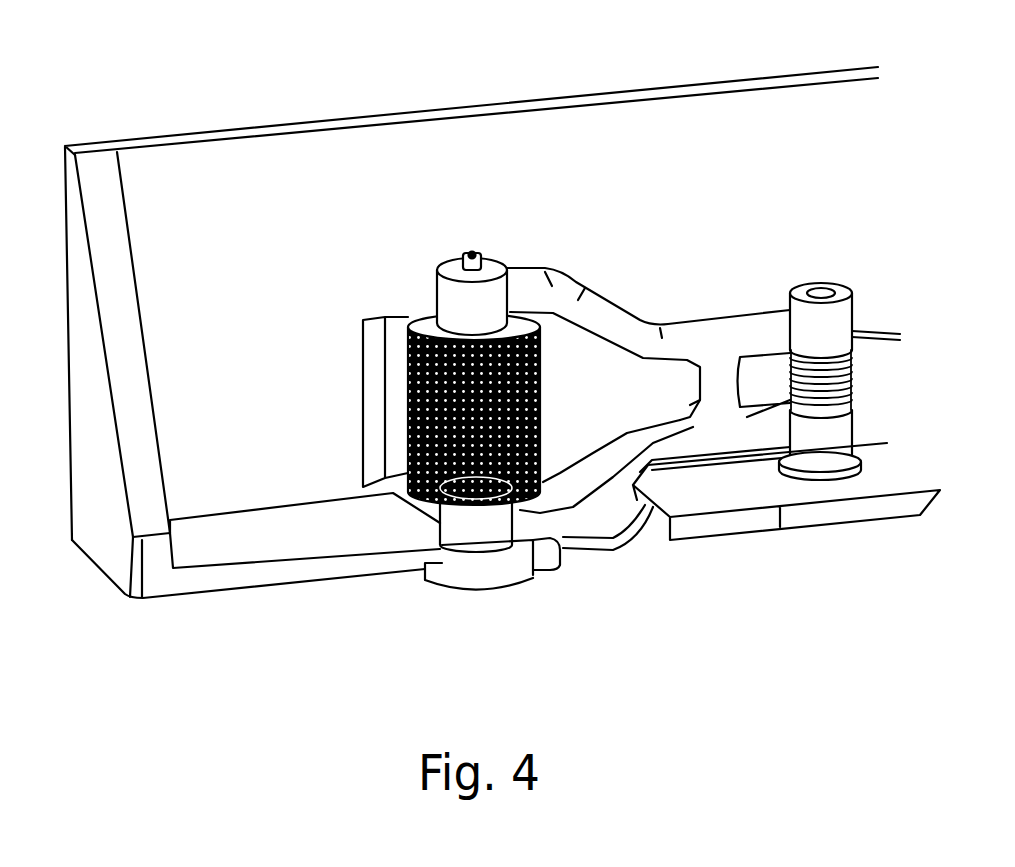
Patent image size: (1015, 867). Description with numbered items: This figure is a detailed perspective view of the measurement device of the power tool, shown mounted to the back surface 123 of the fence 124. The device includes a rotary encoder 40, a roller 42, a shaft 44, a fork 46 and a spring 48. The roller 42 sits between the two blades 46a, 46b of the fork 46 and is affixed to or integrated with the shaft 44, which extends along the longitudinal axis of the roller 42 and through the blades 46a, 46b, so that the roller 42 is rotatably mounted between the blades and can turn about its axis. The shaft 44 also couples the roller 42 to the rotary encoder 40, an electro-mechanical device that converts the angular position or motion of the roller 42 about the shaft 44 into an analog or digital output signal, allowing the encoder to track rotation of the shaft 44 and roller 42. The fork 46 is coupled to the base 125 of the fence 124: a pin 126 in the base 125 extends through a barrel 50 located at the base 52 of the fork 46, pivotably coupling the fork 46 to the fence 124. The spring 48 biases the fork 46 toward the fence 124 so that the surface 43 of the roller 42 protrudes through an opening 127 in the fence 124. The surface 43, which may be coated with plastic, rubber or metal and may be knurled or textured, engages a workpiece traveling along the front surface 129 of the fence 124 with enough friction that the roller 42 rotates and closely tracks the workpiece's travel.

The front surface 129 is at (471, 311).
The fence 124 is at (725, 87).
The back surface 123 is at (821, 144).
The opening 127 is at (397, 390).
The roller 42 is at (470, 379).
The surface 43 is at (543, 407).
The shaft 44 is at (475, 257).
The rotary encoder 40 is at (490, 593).
The fork 46 is at (686, 400).
The blade 46a is at (595, 303).
The blade 46b is at (580, 515).
The pin 126 is at (825, 285).
The barrel 50 is at (848, 322).
The spring 48 is at (853, 383).
The base 52 is at (884, 472).
The base 125 is at (712, 498).